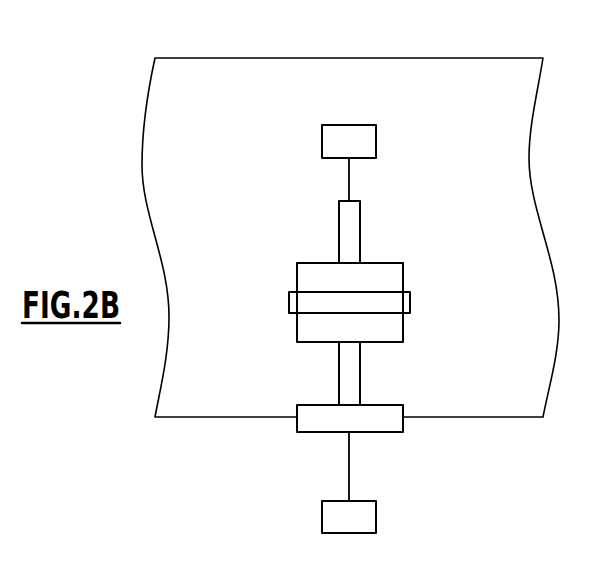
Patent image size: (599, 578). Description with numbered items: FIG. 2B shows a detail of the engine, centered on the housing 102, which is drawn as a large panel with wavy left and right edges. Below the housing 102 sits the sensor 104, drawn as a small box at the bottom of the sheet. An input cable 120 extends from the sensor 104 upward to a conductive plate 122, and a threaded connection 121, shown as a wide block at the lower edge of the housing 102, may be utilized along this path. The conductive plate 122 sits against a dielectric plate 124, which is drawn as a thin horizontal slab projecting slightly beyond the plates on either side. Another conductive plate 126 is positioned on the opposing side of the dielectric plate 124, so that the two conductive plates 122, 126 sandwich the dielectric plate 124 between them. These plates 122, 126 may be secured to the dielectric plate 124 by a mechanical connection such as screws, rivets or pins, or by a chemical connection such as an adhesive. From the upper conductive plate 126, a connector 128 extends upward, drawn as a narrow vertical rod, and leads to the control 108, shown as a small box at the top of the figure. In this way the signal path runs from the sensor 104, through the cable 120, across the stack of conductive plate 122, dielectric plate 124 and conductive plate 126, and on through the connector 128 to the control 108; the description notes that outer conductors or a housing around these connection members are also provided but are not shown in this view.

The housing 102 is at (424, 73).
The sensor 104 is at (322, 516).
The control 108 is at (322, 141).
The input cable 120 is at (339, 366).
The threaded connection 121 is at (313, 420).
The conductive plate 122 is at (307, 326).
The dielectric plate 124 is at (410, 300).
The conductive plate 126 is at (397, 281).
The connector 128 is at (339, 236).